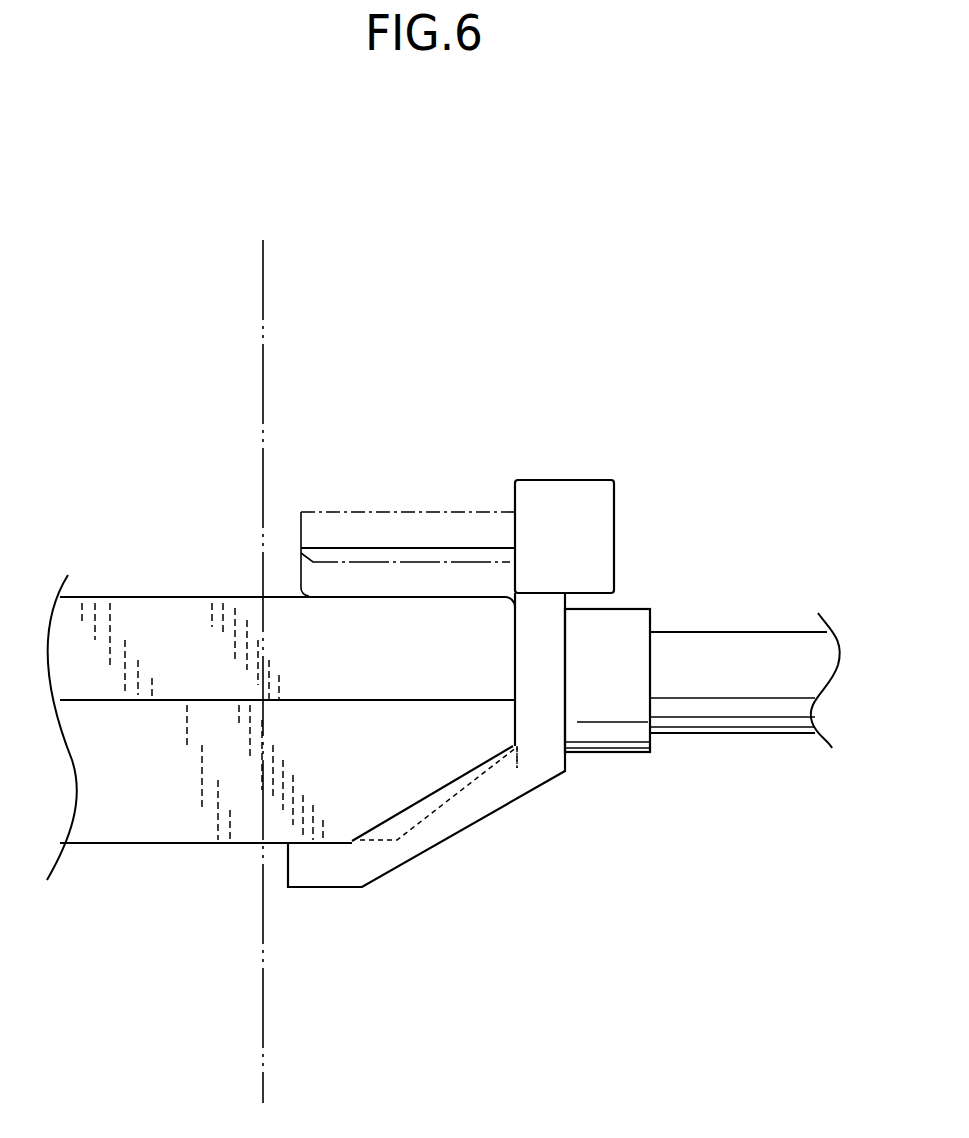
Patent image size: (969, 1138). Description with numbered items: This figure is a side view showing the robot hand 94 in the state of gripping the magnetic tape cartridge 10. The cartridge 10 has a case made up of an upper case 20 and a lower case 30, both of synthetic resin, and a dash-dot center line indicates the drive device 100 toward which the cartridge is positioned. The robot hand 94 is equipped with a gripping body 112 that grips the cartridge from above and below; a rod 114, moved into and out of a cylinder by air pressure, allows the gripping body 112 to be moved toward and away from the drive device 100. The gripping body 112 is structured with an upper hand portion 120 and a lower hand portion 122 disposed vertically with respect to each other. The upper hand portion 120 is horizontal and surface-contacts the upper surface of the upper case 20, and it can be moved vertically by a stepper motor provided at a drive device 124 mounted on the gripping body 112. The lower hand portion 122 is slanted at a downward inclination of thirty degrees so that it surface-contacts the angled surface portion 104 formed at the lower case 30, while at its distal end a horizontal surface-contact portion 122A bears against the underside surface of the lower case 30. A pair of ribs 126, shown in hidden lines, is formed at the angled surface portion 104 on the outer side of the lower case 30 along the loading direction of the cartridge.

The magnetic tape cartridge 10 is at (105, 522).
The upper case 20 is at (143, 610).
The lower case 30 is at (185, 830).
The robot hand 94 is at (777, 537).
The drive device 100 is at (263, 317).
The angled surface portion 104 is at (440, 797).
The gripping body 112 is at (562, 773).
The rod 114 is at (753, 710).
The upper hand portion 120 is at (373, 573).
The lower hand portion 122 is at (392, 855).
The surface-contact portion 122A is at (330, 877).
The drive device 124 is at (600, 543).
The ribs 126 is at (477, 780).